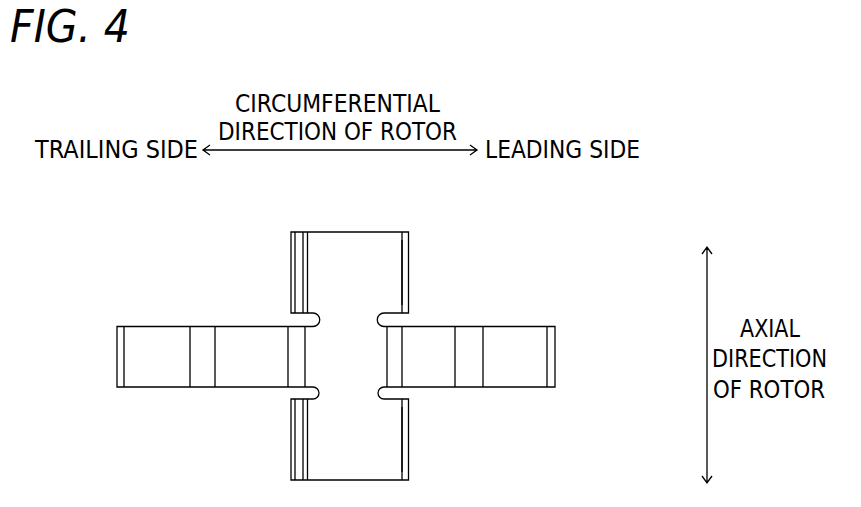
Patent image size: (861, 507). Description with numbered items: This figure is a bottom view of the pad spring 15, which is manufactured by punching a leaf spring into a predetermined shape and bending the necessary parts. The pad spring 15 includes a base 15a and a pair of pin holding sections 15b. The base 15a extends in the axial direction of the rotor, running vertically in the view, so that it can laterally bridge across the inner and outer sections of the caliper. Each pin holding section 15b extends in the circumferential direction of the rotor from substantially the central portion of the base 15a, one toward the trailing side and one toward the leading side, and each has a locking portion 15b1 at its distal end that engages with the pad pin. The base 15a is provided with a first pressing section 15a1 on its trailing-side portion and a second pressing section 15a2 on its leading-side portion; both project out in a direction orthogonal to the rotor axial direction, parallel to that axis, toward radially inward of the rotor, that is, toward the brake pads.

The pad spring 15 is at (176, 264).
The base 15a is at (345, 240).
The first pressing section 15a1 is at (298, 267).
The second pressing section 15a2 is at (405, 257).
The pin holding section 15b is at (205, 326).
The locking portion 15b1 is at (124, 357).